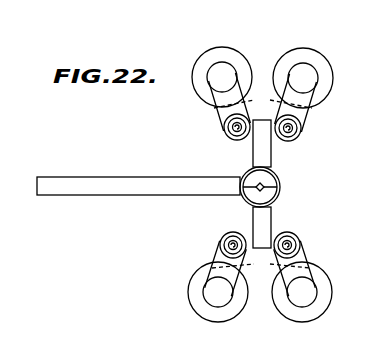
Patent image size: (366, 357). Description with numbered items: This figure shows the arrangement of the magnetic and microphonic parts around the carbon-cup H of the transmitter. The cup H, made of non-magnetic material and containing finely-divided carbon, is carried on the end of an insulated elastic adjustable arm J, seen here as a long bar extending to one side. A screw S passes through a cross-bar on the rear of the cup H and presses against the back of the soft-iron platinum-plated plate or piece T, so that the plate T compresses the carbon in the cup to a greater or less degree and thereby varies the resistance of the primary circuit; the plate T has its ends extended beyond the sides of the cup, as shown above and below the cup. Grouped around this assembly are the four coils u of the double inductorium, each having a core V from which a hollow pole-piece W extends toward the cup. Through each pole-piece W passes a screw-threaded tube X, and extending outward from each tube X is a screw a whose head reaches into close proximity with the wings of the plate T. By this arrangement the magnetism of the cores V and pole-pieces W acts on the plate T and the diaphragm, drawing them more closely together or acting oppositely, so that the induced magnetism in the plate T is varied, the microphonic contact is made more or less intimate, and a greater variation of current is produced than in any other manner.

The insulated elastic adjustable arm J is at (138, 183).
The coils of a double inductorium u is at (260, 177).
The cores V is at (260, 184).
The screw-threaded tubes X is at (234, 139).
The screws a is at (224, 131).
The pole-pieces W is at (262, 182).
The soft-iron platinum-plated plate T is at (262, 184).
The carbon-cup H is at (279, 201).
The screw S is at (264, 189).